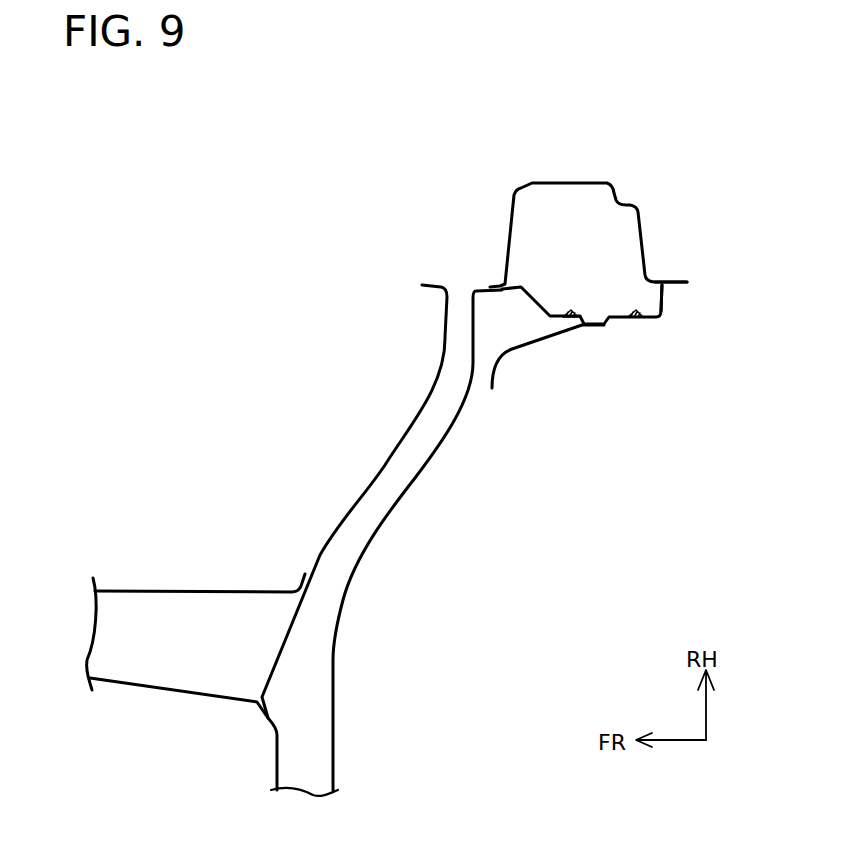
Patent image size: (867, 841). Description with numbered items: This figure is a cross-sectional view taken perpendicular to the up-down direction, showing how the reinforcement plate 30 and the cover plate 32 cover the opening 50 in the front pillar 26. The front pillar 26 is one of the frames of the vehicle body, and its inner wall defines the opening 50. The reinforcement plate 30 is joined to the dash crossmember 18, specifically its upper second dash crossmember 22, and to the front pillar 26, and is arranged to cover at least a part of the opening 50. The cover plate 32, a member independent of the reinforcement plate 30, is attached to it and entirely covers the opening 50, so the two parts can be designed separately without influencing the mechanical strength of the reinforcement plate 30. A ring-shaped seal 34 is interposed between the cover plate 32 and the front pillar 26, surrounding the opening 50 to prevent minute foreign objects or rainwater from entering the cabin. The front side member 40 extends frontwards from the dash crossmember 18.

The dash crossmember 18 is at (405, 540).
The second dash crossmember 22 is at (363, 559).
The front pillar 26 is at (543, 217).
The reinforcement plate 30 is at (523, 347).
The cover plate 32 is at (621, 322).
The seal 34 is at (642, 310).
The front side member 40 is at (153, 677).
The opening 50 is at (625, 312).